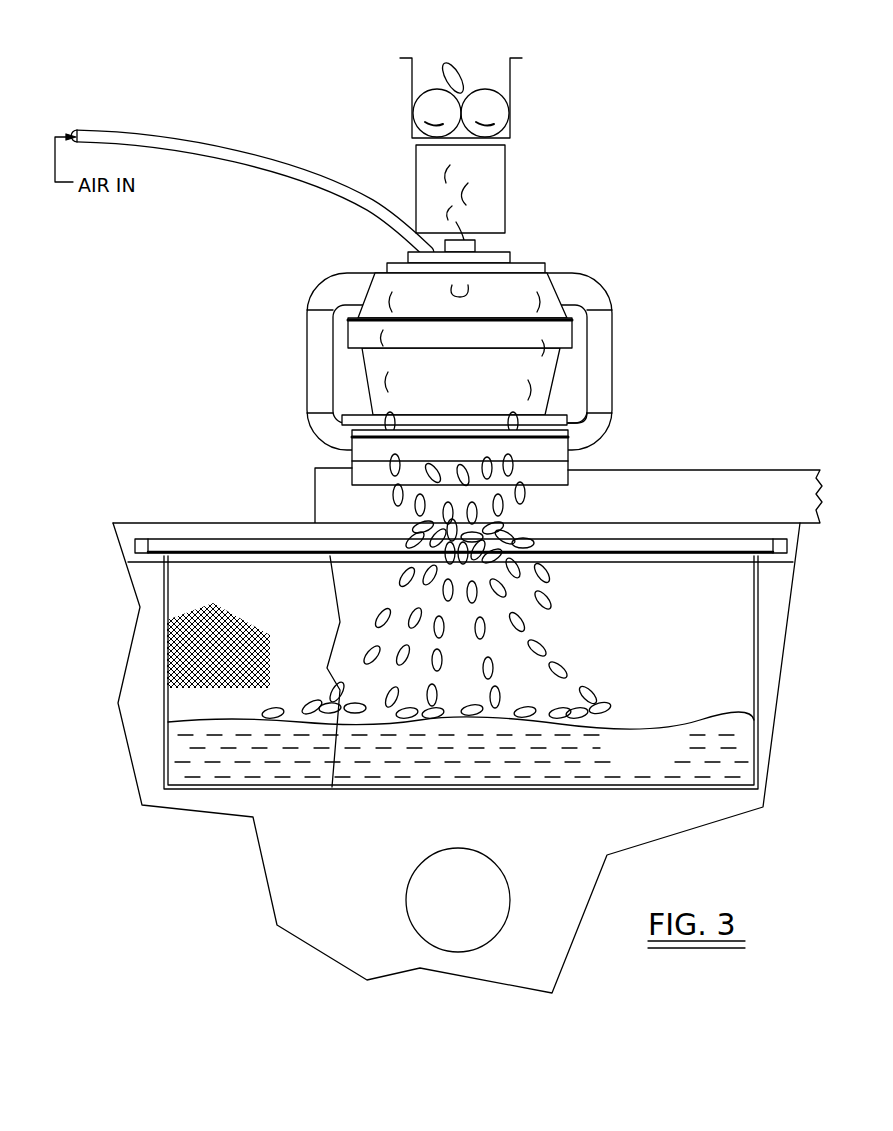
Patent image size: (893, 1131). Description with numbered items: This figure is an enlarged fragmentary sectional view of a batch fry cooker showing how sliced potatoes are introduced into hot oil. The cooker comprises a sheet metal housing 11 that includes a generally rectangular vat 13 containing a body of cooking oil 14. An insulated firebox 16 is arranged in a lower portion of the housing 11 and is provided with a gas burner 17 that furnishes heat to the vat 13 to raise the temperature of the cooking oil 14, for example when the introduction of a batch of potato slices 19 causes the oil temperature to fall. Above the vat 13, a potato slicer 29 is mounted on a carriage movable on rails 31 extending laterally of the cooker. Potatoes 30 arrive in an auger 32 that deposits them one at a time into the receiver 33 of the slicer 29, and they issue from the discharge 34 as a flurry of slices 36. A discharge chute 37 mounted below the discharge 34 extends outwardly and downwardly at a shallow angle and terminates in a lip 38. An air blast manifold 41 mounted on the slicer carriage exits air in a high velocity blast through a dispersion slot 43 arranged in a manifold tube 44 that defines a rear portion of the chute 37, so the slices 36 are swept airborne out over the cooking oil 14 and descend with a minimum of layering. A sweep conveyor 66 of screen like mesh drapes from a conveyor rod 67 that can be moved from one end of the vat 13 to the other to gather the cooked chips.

The sheet metal housing 11 is at (113, 528).
The vat 13 is at (757, 692).
The cooking oil 14 is at (628, 756).
The firebox 16 is at (325, 881).
The gas burner 17 is at (443, 919).
The potato slices 19 is at (545, 648).
The potato slicer 29 is at (548, 273).
The potatoes 30 is at (458, 70).
The rails 31 is at (765, 470).
The auger 32 is at (512, 88).
The receiver 33 is at (506, 188).
The discharge 34 is at (567, 430).
The slices 36 is at (500, 508).
The discharge chute 37 is at (352, 456).
The lip 38 is at (568, 465).
The air blast manifold 41 is at (307, 333).
The dispersion slot 43 is at (338, 432).
The manifold tube 44 is at (572, 420).
The sweep conveyor 66 is at (190, 656).
The conveyor rod 67 is at (180, 530).